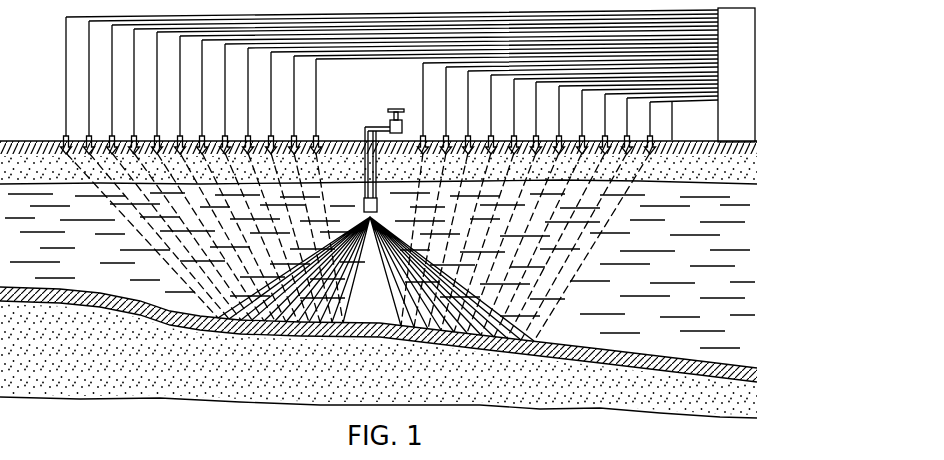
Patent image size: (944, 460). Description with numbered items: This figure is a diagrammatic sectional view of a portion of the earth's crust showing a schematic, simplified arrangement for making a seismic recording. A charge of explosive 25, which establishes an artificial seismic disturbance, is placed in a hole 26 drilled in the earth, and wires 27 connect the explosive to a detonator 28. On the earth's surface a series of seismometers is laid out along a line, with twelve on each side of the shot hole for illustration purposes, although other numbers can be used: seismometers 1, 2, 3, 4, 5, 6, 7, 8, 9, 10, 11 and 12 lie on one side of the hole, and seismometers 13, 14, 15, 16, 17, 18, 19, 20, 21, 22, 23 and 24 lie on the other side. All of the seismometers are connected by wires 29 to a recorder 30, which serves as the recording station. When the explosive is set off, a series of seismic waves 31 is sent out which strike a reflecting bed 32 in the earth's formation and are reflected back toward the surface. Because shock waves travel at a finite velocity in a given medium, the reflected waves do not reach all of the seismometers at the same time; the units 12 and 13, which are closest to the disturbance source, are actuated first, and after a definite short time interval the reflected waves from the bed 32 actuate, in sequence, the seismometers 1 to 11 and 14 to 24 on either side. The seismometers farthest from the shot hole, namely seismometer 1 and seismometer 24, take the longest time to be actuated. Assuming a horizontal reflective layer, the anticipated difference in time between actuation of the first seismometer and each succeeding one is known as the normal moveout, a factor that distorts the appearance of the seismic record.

The seismometer 1 is at (68, 139).
The seismometer 2 is at (91, 139).
The seismometer 3 is at (114, 139).
The seismometer 4 is at (136, 139).
The seismometer 5 is at (159, 139).
The seismometer 6 is at (182, 139).
The seismometer 7 is at (204, 139).
The seismometer 8 is at (227, 139).
The seismometer 9 is at (250, 139).
The seismometer 10 is at (273, 139).
The seismometer 11 is at (296, 139).
The seismometer 12 is at (318, 139).
The seismometer 13 is at (425, 139).
The seismometer 14 is at (448, 139).
The seismometer 15 is at (470, 139).
The seismometer 16 is at (493, 139).
The seismometer 17 is at (516, 139).
The seismometer 18 is at (538, 139).
The seismometer 19 is at (561, 139).
The seismometer 20 is at (584, 139).
The seismometer 21 is at (607, 139).
The seismometer 22 is at (629, 139).
The seismometer 23 is at (652, 139).
The seismometer 24 is at (674, 137).
The charge of explosive 25 is at (378, 204).
The hole 26 is at (363, 137).
The wires 27 is at (374, 128).
The detonator 28 is at (400, 118).
The wires 29 is at (686, 86).
The recorder 30 is at (748, 92).
The seismic waves 31 is at (170, 266).
The reflecting bed 32 is at (107, 292).